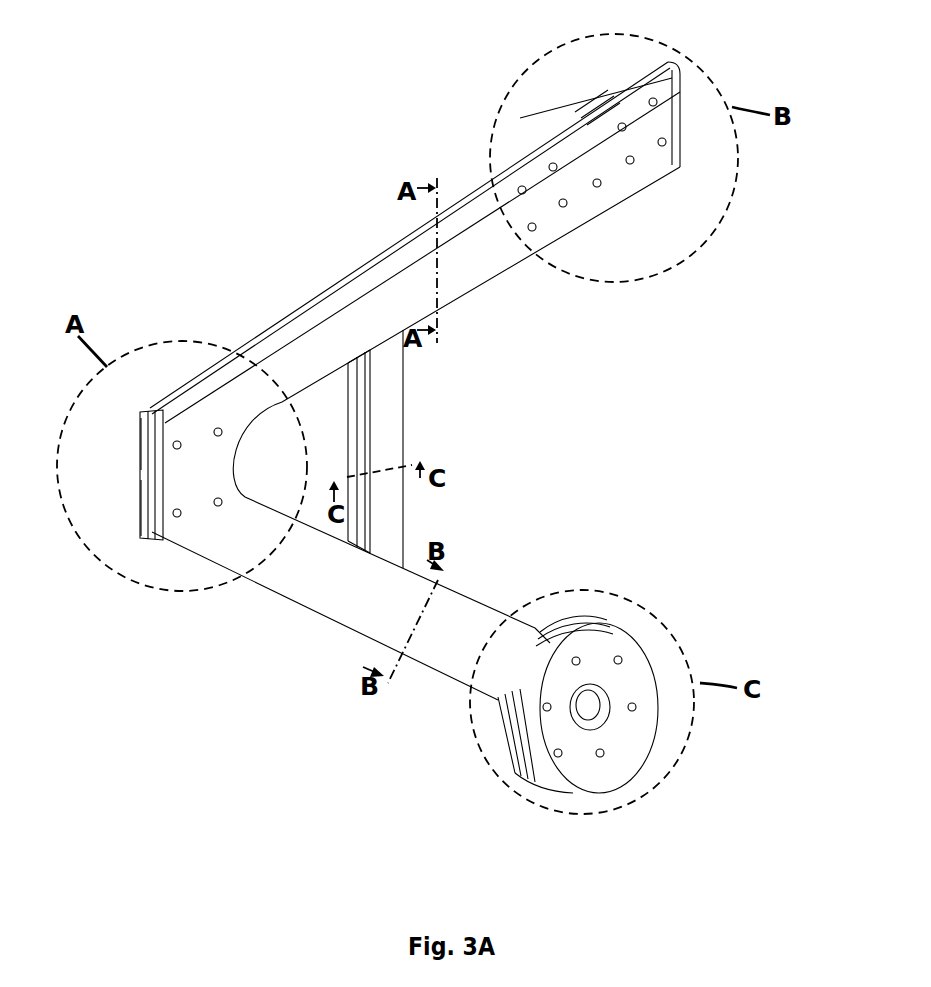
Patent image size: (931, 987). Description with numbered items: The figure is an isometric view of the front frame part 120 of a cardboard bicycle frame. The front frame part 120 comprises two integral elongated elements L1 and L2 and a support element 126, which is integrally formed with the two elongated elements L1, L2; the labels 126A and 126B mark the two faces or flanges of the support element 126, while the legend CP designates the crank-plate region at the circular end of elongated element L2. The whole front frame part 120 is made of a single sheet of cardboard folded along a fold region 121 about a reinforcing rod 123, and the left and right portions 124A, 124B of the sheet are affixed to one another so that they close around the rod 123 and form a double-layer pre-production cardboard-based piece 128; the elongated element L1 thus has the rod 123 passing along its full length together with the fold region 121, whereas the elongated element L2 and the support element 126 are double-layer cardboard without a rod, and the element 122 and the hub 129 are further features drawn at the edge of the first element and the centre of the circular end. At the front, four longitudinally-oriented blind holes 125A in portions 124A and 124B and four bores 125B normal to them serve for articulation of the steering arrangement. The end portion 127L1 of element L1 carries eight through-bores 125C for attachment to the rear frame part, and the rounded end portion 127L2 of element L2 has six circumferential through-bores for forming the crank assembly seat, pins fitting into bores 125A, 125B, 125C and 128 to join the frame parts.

The front frame part 120 is at (342, 218).
The fold region 121 is at (260, 333).
The side face edge of link 122 is at (315, 307).
The reinforcing rod 123 is at (154, 420).
The left portion of cardboard sheet 124A is at (147, 459).
The right portion of cardboard sheet 124B is at (160, 512).
The longitudinally-oriented blind holes 125A is at (160, 526).
The bores 125B is at (219, 504).
The through-bores 125C is at (566, 204).
The support element 126 is at (404, 445).
The cross member first flange 126A is at (350, 388).
The cross member second flange 126B is at (363, 503).
The end portion of elongated element L1 127L1 is at (647, 127).
The end portion of elongated element L2 127L2 is at (603, 633).
The double-layer pre-production cardboard-based piece 128 is at (620, 663).
The hub bore 129 is at (580, 705).
The elongated element L1 is at (397, 291).
The elongated element L2 is at (300, 594).
The coupling plate CP is at (577, 603).